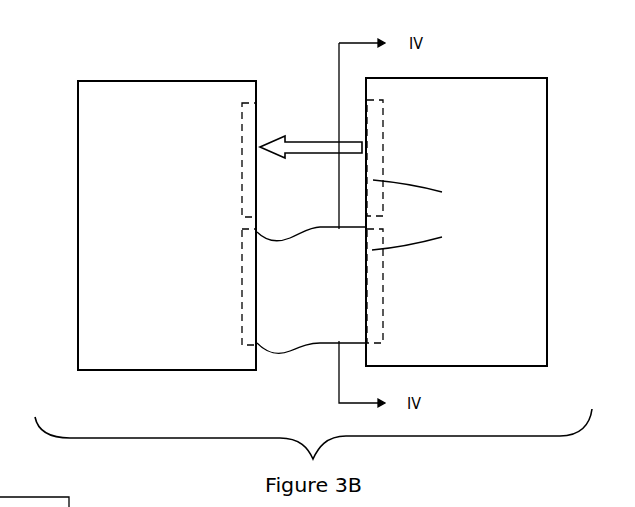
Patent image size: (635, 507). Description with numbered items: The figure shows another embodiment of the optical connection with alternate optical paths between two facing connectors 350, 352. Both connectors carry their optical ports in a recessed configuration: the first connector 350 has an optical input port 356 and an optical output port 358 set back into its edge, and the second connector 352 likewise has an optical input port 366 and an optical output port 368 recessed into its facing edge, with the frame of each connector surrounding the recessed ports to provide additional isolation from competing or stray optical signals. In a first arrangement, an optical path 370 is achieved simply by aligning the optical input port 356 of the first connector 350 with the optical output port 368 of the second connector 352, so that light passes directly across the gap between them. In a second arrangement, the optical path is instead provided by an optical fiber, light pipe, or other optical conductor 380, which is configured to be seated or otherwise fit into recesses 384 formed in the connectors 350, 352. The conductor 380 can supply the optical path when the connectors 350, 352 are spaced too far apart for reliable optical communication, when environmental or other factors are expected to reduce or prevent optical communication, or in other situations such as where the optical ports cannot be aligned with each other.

The connector 350 is at (167, 80).
The connector 352 is at (455, 77).
The optical input port 356 is at (238, 160).
The optical output port 358 is at (238, 288).
The optical input port 366 is at (388, 287).
The optical output port 368 is at (386, 155).
The optical path 370 is at (310, 140).
The optical conductor 380 is at (330, 297).
The recesses 384 is at (423, 215).